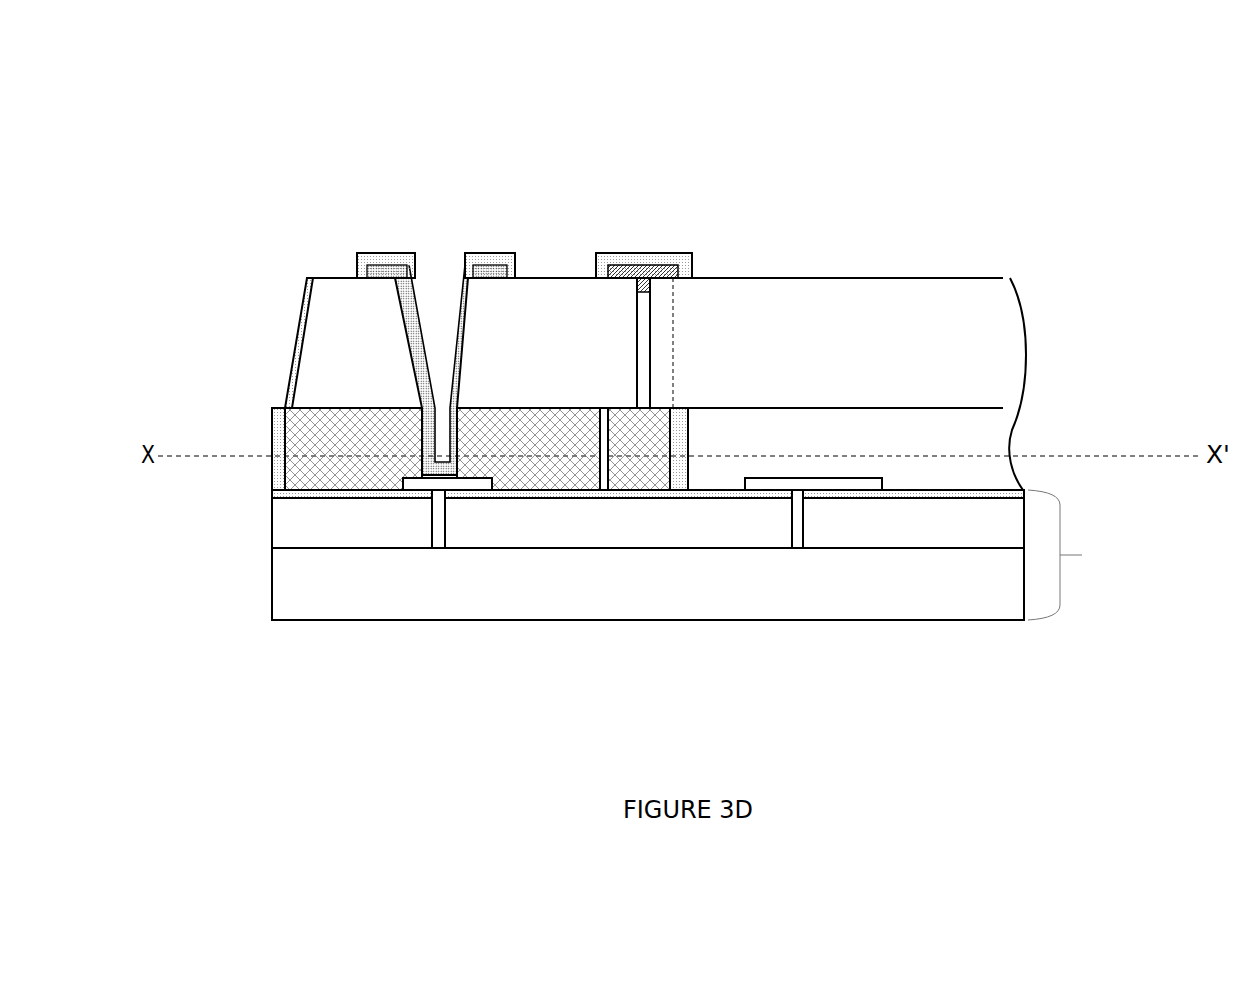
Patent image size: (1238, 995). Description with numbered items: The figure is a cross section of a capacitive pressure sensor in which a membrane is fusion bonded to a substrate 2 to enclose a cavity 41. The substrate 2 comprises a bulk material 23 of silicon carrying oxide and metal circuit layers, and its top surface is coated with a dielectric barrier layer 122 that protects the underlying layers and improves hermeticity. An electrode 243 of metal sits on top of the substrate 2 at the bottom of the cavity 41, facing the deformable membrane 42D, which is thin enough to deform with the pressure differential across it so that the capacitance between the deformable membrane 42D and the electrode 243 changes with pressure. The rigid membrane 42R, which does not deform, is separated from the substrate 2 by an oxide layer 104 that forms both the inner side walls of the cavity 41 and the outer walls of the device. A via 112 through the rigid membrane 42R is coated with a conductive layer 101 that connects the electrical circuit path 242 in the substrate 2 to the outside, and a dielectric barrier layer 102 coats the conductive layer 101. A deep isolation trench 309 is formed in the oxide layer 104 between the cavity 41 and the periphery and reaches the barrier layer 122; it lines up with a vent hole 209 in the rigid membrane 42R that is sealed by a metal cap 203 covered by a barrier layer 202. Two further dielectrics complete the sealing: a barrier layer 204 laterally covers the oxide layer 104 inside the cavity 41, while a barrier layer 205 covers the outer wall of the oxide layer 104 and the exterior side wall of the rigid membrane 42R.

The substrate 2 is at (740, 555).
The bulk material 23 is at (634, 611).
The cavity 41 is at (845, 456).
The rigid membrane 42R is at (567, 379).
The deformable membrane 42D is at (856, 371).
The conductive layer 101 is at (390, 267).
The barrier layer 102 is at (483, 260).
The oxide layer 104 is at (551, 475).
The via 112 is at (448, 233).
The barrier layer 122 is at (277, 497).
The barrier layer 202 is at (623, 257).
The metal cap 203 is at (690, 272).
The barrier layer 204 is at (673, 465).
The barrier layer 205 is at (288, 378).
The vent hole 209 is at (643, 375).
The electrical circuit path 242 is at (440, 510).
The electrode 243 is at (820, 483).
The isolation trench 309 is at (602, 480).